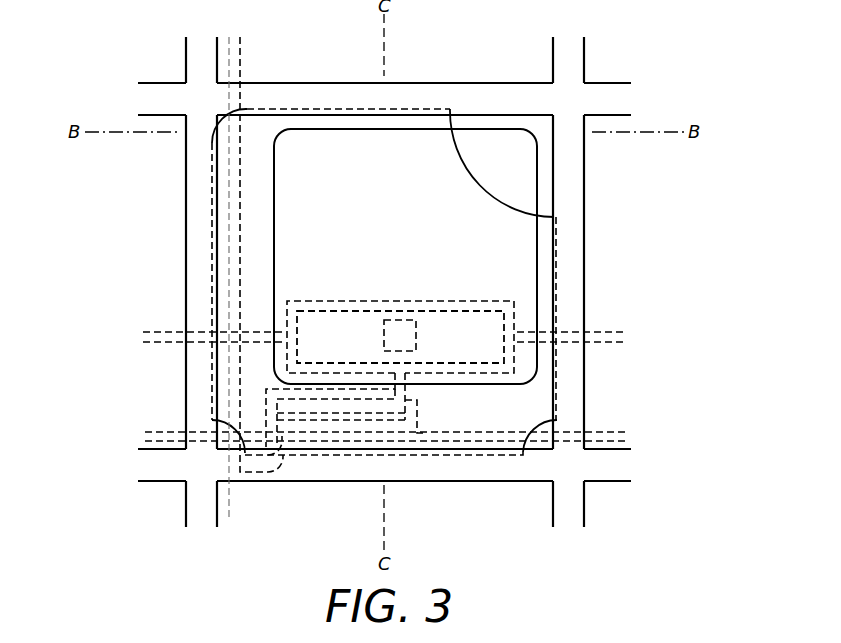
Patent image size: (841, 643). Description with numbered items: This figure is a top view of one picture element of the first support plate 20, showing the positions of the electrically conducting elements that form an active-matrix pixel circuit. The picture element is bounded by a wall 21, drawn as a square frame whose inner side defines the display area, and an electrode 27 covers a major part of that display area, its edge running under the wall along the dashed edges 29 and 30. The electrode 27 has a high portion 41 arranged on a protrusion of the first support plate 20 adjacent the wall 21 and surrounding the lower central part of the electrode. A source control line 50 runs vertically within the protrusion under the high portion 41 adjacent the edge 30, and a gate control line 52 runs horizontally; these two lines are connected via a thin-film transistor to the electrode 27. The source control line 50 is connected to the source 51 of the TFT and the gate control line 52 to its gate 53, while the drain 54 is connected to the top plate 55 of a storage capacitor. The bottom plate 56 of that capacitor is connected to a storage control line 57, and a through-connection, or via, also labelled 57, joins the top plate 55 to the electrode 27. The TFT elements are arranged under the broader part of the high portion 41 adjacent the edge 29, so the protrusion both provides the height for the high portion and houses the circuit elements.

The first support plate 20 is at (656, 21).
The wall 21 is at (573, 244).
The electrode 27 is at (545, 295).
The edge 29 is at (443, 456).
The edge 30 is at (212, 304).
The high portion 41 is at (257, 252).
The source control line 50 is at (232, 518).
The source 51 is at (300, 427).
The gate control line 52 is at (145, 432).
The gate 53 is at (338, 440).
The drain 54 is at (367, 405).
The top plate 55 is at (310, 310).
The bottom plate 56 is at (353, 300).
The storage control line 57 is at (143, 333).